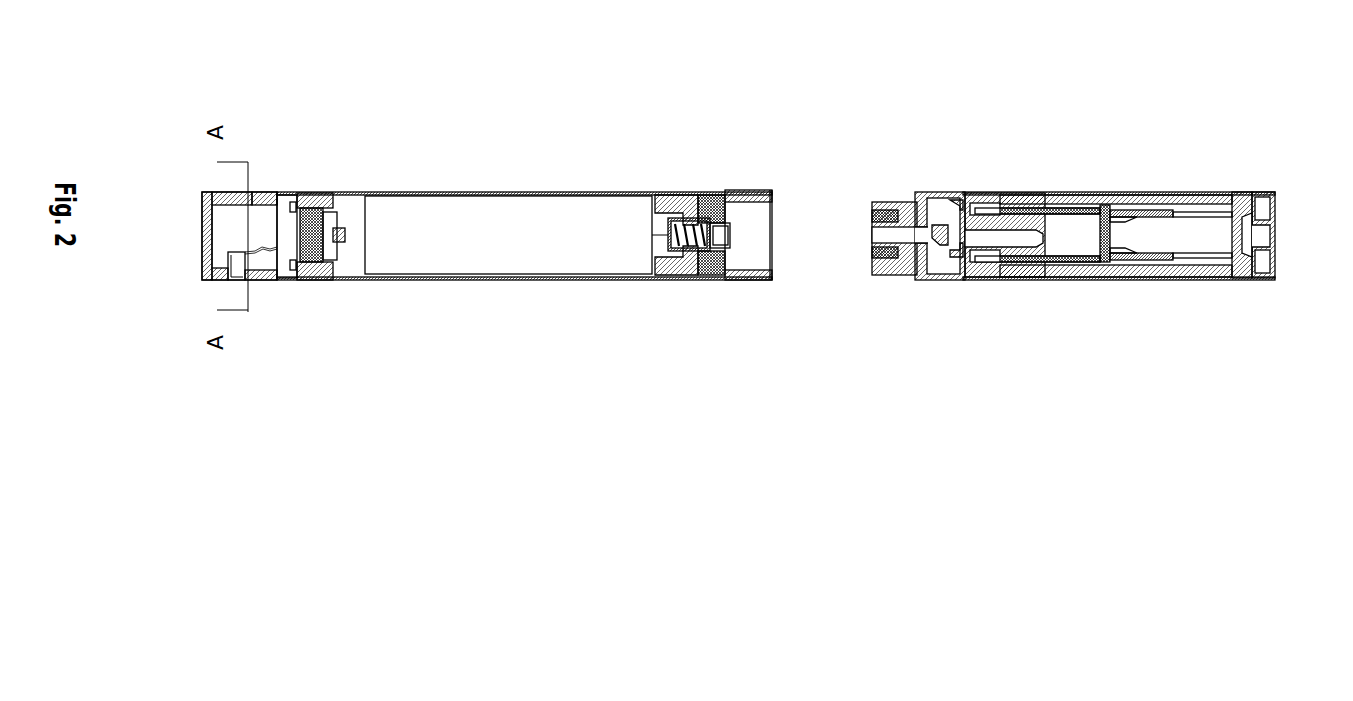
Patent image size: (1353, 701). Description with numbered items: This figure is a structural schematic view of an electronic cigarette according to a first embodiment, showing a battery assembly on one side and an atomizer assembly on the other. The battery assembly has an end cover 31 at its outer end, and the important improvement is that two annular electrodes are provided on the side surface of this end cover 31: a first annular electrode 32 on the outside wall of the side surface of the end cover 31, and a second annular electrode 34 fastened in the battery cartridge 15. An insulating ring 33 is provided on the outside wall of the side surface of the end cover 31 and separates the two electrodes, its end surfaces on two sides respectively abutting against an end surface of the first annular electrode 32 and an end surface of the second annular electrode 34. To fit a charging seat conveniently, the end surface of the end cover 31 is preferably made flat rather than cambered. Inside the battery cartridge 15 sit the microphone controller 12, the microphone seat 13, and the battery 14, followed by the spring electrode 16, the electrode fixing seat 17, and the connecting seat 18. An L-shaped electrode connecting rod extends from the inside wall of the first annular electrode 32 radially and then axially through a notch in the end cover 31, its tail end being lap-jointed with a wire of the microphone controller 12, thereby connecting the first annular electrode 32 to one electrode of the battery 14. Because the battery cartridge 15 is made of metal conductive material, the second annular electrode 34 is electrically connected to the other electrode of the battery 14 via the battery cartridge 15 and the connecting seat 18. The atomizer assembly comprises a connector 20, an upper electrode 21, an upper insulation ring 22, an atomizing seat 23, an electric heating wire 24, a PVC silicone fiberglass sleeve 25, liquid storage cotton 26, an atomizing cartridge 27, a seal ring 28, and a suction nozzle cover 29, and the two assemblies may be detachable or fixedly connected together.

The microphone controller 12 is at (298, 268).
The microphone seat 13 is at (325, 277).
The battery 14 is at (420, 272).
The battery cartridge 15 is at (500, 280).
The spring electrode 16 is at (675, 252).
The electrode fixing seat 17 is at (695, 255).
The connecting seat 18 is at (768, 280).
The connector 20 is at (882, 273).
The upper electrode 21 is at (889, 258).
The upper insulation ring 22 is at (922, 278).
The atomizing seat 23 is at (972, 278).
The electric heating wire 24 is at (1105, 263).
The PVC silicone fiberglass sleeve 25 is at (1140, 262).
The liquid storage cotton 26 is at (1163, 268).
The atomizing cartridge 27 is at (1196, 272).
The seal ring 28 is at (1250, 275).
The suction nozzle cover 29 is at (1275, 278).
The end cover 31 is at (203, 193).
The first annular electrode 32 is at (225, 192).
The insulating ring 33 is at (233, 280).
The second annular electrode 34 is at (260, 192).